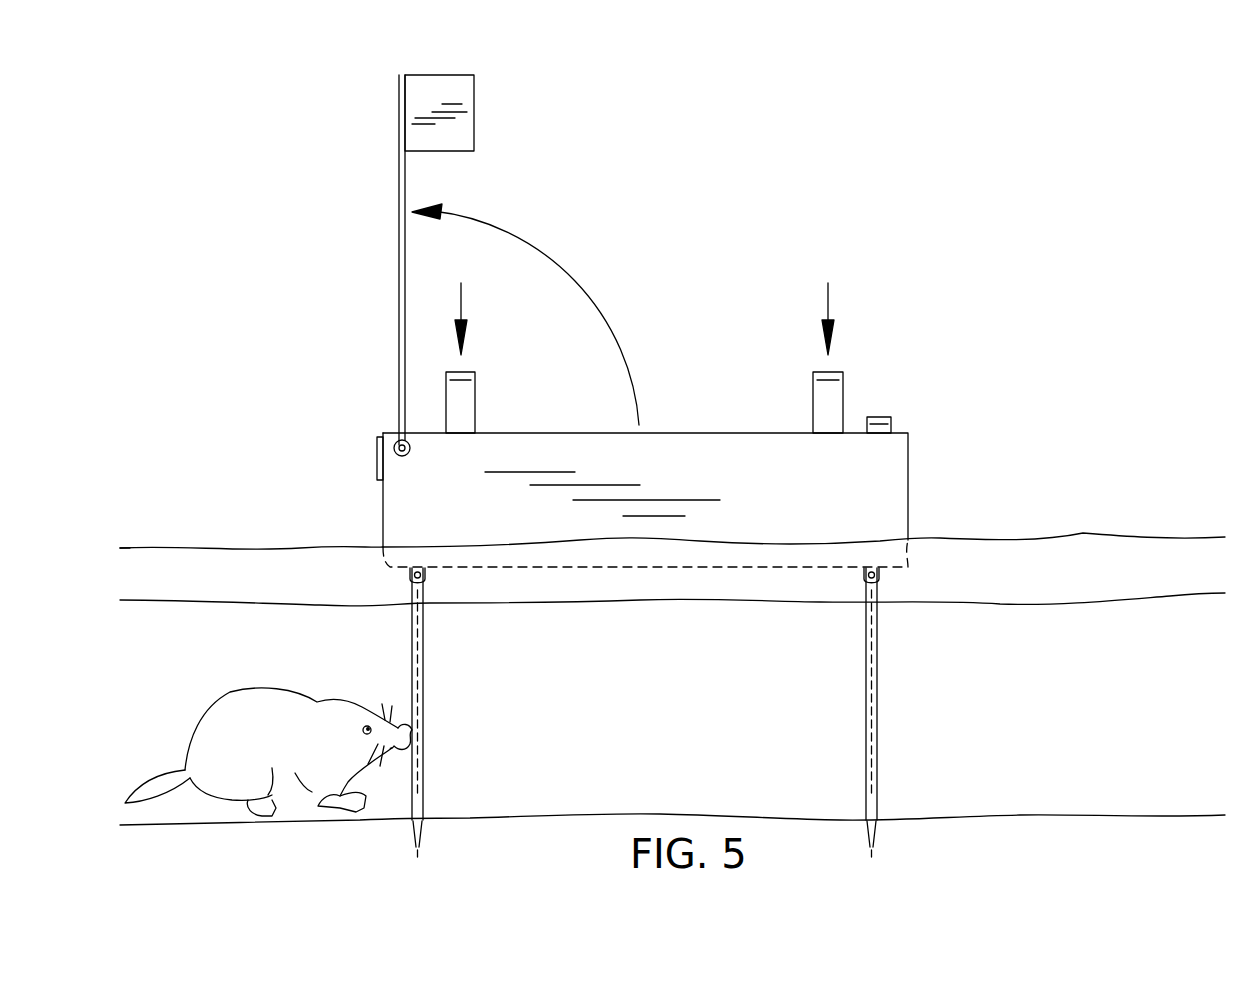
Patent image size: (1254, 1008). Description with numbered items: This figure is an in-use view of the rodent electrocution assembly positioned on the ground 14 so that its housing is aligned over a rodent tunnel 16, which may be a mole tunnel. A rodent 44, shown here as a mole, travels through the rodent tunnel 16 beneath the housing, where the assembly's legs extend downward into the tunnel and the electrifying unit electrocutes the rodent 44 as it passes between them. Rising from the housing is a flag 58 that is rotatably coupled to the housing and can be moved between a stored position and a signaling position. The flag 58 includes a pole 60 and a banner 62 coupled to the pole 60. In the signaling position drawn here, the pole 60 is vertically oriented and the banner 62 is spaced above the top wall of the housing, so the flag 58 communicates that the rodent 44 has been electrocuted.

The ground 14 is at (1083, 533).
The rodent tunnel 16 is at (265, 645).
The rodent 44 is at (317, 702).
The flag 58 is at (373, 302).
The pole 60 is at (399, 191).
The banner 62 is at (474, 80).